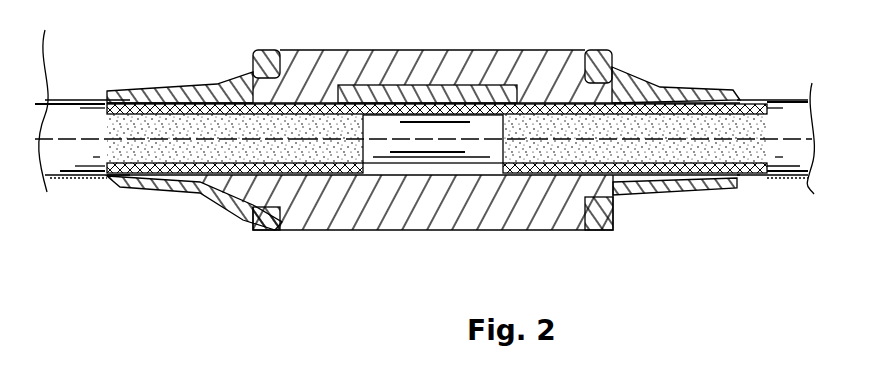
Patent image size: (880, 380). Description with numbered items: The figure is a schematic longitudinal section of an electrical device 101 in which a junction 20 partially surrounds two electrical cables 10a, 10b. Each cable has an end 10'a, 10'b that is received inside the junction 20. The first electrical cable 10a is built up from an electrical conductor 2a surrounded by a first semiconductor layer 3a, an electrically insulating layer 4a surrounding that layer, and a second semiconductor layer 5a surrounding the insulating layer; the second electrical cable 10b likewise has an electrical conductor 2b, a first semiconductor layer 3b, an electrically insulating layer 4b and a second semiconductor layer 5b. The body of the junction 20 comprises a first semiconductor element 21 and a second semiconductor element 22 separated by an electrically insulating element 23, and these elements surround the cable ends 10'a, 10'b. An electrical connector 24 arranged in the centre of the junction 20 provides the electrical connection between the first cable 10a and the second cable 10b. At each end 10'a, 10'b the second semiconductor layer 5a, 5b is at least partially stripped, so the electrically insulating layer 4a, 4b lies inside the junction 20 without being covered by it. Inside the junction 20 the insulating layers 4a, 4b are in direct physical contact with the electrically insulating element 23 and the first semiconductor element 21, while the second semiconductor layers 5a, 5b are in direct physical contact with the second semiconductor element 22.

The device 101 is at (134, 256).
The first electrical cable 10a is at (87, 198).
The second electrical cable 10b is at (763, 204).
The end of first electrical cable 10'a is at (287, 237).
The end of second electrical cable 10'b is at (622, 237).
The second semiconductor layer 5a is at (90, 117).
The second semiconductor layer 5b is at (792, 117).
The first semiconductor layer 3a is at (150, 103).
The first semiconductor layer 3b is at (553, 108).
The electrically insulating layer 4a is at (257, 213).
The electrically insulating layer 4b is at (670, 193).
The electrical conductor 2a is at (335, 183).
The electrical conductor 2b is at (523, 183).
The junction 20 is at (436, 245).
The first semiconductor element 21 is at (477, 103).
The second semiconductor element 22 is at (268, 68).
The electrically insulating element 23 is at (345, 95).
The electrical connector 24 is at (417, 110).